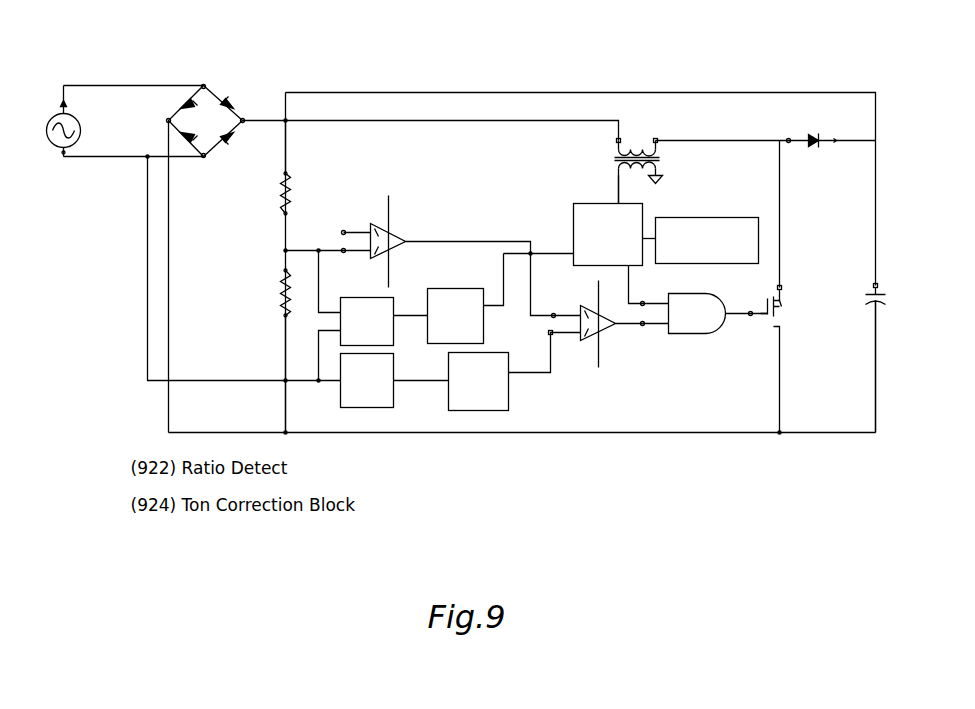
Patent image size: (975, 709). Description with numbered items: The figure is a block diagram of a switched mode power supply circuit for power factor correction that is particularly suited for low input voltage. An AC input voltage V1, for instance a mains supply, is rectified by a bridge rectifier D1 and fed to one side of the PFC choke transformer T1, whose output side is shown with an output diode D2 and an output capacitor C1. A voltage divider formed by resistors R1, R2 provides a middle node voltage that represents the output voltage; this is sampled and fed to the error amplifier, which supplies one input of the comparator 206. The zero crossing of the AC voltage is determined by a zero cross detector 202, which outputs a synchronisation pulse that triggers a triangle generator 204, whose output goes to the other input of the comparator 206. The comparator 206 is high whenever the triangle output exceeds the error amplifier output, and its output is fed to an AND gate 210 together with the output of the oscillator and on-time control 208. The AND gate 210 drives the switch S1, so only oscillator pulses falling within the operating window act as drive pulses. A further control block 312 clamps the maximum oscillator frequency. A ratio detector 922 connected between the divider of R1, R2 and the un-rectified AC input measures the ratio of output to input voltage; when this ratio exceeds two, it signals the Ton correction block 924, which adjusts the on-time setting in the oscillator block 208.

The AC input voltage V1 is at (78, 121).
The bridge rectifier D1 is at (212, 90).
The resistor R1 is at (269, 168).
The resistor R2 is at (269, 351).
The ratio detector 922 is at (384, 322).
The Ton correction block 924 is at (456, 316).
The zero cross detector 202 is at (395, 381).
The triangle generator 204 is at (515, 371).
The comparator 206 is at (578, 343).
The oscillator and on-time control 208 is at (575, 241).
The control block 312 is at (701, 230).
The AND gate 210 is at (718, 314).
The PFC choke transformer T1 is at (639, 157).
The output diode D2 is at (766, 200).
The switch S1 is at (787, 360).
The output capacitor C1 is at (889, 358).